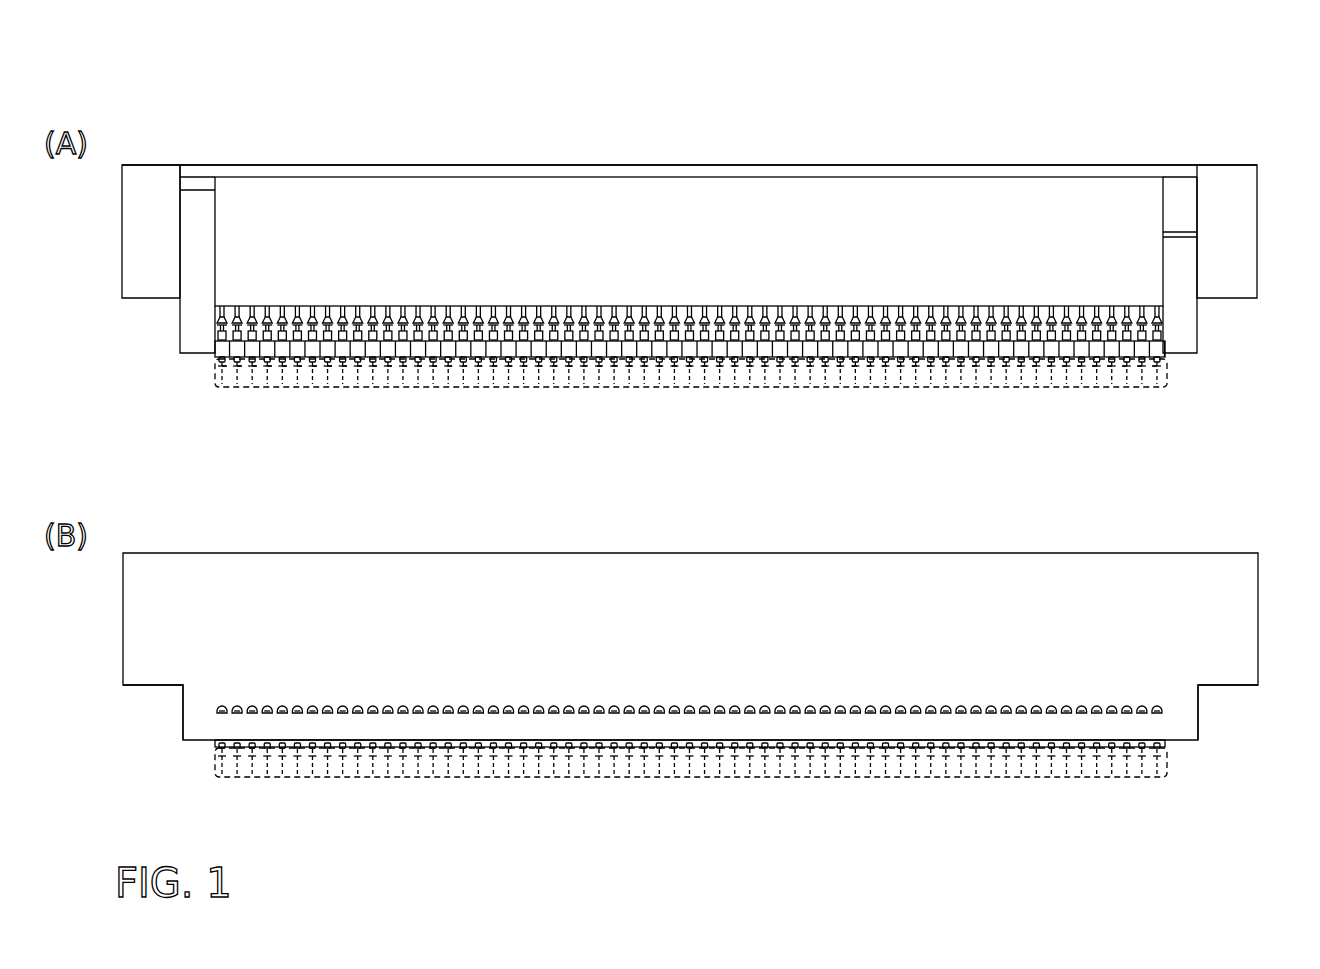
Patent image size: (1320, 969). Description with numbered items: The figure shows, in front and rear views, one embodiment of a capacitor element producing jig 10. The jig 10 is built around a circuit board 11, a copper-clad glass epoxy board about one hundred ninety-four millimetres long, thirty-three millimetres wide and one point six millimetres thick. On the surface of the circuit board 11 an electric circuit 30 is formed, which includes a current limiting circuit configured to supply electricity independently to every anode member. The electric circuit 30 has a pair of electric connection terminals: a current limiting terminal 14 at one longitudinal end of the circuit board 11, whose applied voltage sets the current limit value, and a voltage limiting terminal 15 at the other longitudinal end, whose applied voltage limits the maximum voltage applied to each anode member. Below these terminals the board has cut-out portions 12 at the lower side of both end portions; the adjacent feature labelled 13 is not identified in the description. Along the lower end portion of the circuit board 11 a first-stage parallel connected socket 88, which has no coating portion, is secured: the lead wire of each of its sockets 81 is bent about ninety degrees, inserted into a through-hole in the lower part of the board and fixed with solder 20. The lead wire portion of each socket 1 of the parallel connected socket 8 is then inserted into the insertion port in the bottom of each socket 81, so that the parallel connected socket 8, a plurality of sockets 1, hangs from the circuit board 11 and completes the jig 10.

The socket 1 is at (371, 385).
The parallel connected socket 8 is at (432, 375).
The capacitor element producing jig 10 is at (937, 131).
The circuit board 11 is at (585, 170).
The cut-out portion 12 is at (160, 305).
The lock portion 13 is at (1221, 313).
The current limiting terminal 14 is at (137, 249).
The voltage limiting terminal 15 is at (1240, 243).
The solder 20 is at (636, 312).
The electric circuit 30 is at (684, 222).
The socket 81 is at (563, 348).
The parallel connected socket 88 is at (770, 350).